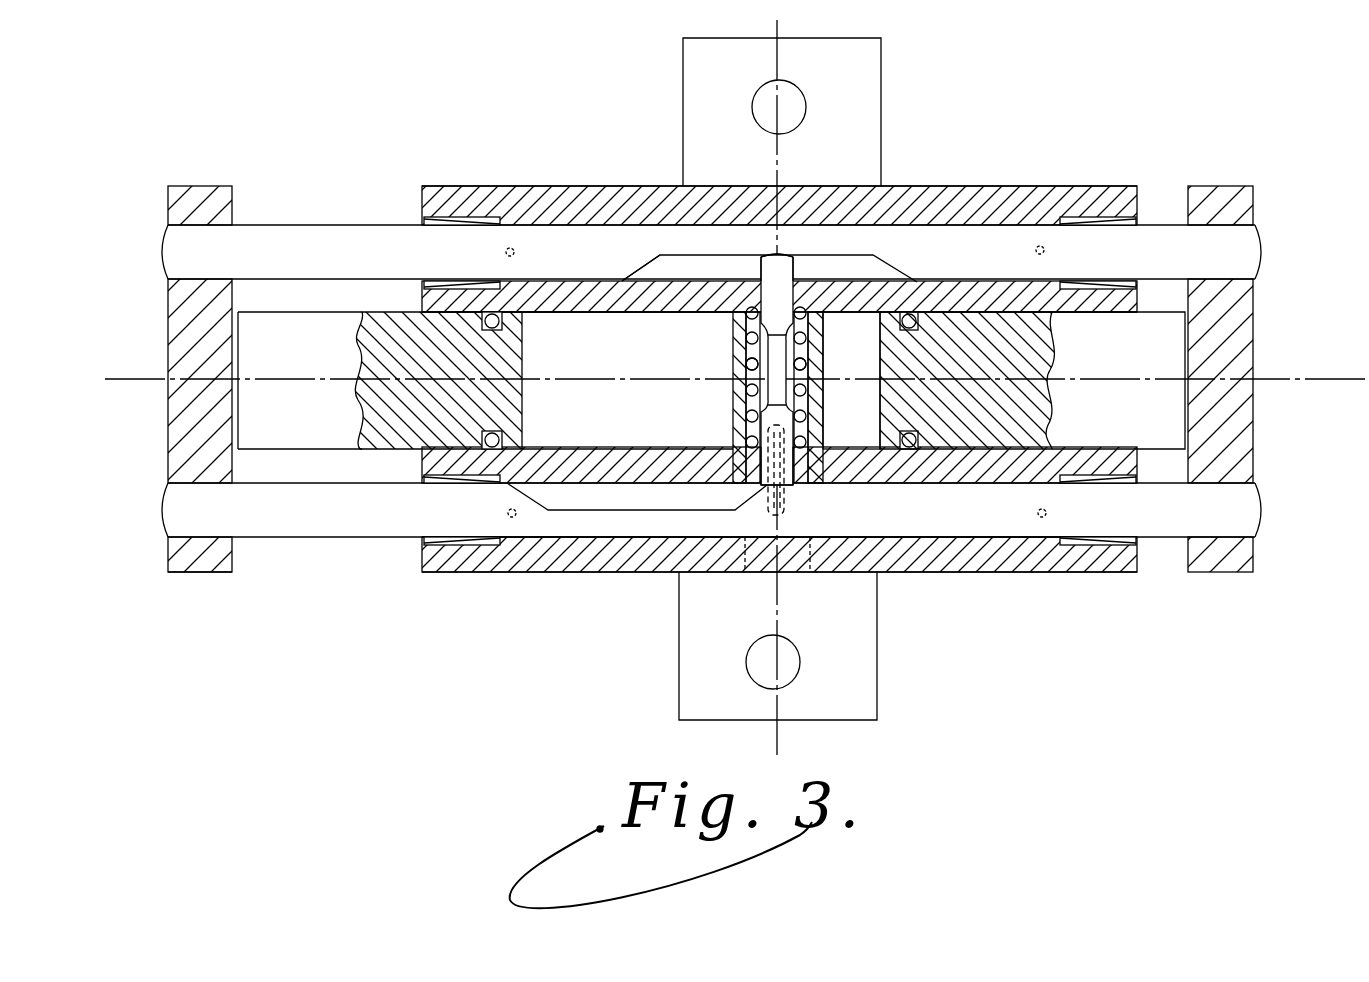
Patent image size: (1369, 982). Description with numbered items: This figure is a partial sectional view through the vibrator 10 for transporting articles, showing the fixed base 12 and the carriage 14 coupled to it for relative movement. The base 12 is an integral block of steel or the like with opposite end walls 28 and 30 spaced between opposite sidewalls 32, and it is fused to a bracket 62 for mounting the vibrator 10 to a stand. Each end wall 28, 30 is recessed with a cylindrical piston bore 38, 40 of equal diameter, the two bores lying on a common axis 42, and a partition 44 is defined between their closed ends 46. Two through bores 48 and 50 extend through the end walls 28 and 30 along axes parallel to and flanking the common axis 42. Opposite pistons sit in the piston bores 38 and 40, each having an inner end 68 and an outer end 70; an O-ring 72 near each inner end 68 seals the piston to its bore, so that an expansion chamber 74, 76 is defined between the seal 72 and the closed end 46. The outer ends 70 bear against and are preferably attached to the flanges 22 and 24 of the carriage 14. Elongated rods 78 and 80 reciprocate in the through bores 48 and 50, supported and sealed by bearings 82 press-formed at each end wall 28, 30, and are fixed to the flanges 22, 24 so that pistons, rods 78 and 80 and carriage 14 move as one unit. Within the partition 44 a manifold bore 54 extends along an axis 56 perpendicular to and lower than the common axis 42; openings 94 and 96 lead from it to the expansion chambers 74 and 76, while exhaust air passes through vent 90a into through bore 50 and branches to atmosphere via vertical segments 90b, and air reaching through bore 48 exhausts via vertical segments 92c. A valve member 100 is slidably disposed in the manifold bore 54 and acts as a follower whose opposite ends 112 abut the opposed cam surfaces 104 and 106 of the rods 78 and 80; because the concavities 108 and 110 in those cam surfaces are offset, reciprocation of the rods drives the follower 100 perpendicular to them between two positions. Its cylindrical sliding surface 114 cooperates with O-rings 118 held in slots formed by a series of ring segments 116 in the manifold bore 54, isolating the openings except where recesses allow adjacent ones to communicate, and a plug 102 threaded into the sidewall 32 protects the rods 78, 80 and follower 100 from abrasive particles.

The vibrator 10 is at (1062, 97).
The base 12 is at (1028, 188).
The carriage 14 is at (196, 188).
The flange portion 22 is at (184, 572).
The flange portion 24 is at (1212, 572).
The end wall 28 is at (422, 300).
The end wall 30 is at (1138, 556).
The sidewall 32 is at (1046, 572).
The piston bore 38 is at (622, 296).
The piston bore 40 is at (865, 452).
The common axis 42 is at (1268, 378).
The partition 44 is at (806, 374).
The closed end 46 is at (733, 426).
The through bore 48 is at (628, 226).
The through bore 50 is at (598, 525).
The manifold bore 54 is at (796, 484).
The axis 56 is at (777, 48).
The bracket 62 is at (866, 712).
The inner end 68 is at (530, 434).
The outer end 70 is at (236, 436).
The O-ring 72 is at (504, 320).
The expansion chamber 74 is at (590, 358).
The expansion chamber 76 is at (862, 338).
The elongated rod 78 is at (1258, 240).
The elongated rod 80 is at (1258, 504).
The bearing 82 is at (426, 222).
The vent 90a is at (790, 512).
The vertical segment 90b is at (505, 513).
The vertical segment 92c is at (518, 250).
The opening 94 is at (748, 352).
The opening 96 is at (806, 398).
The valve member 100 is at (800, 366).
The plug 102 is at (796, 570).
The cam surface 104 is at (624, 282).
The cam surface 106 is at (924, 484).
The concavity 108 is at (730, 254).
The concavity 110 is at (672, 506).
The opposite ends 112 is at (793, 258).
The sliding surface 114 is at (762, 264).
The ring segment 116 is at (750, 384).
The O-ring 118 is at (746, 370).